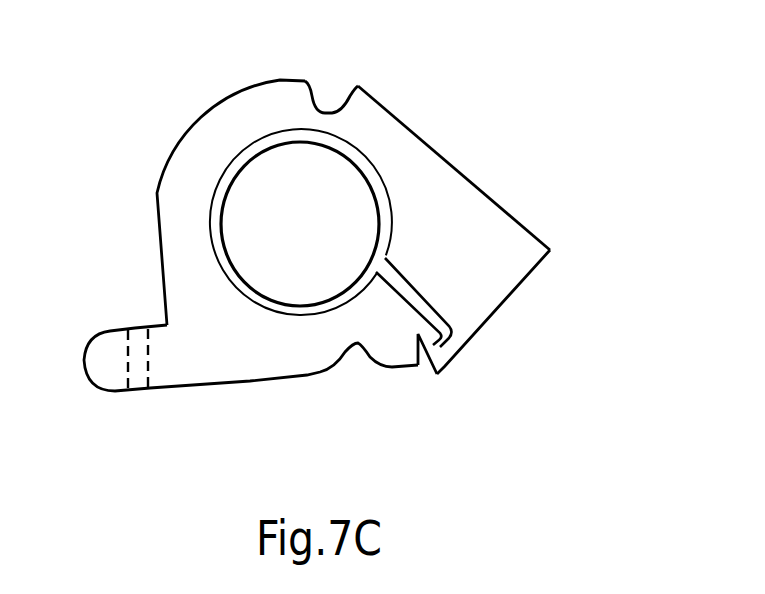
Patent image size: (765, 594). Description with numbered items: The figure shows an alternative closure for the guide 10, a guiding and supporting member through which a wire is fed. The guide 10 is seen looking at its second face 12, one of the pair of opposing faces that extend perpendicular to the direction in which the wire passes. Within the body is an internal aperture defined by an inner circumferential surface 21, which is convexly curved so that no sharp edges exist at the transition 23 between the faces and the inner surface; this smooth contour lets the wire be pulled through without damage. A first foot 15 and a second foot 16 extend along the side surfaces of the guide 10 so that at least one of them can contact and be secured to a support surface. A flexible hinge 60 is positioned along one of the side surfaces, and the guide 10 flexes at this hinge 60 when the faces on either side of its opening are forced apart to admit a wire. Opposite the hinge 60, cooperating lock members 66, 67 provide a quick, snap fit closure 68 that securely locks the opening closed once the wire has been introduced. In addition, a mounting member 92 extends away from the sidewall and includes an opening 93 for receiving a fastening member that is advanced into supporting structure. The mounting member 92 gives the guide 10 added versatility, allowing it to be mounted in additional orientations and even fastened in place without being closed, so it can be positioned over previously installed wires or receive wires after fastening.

The guide 10 is at (586, 186).
The second face 12 is at (253, 366).
The first foot 15 is at (200, 389).
The second foot 16 is at (477, 169).
The inner circumferential surface 21 is at (366, 183).
The transition 23 is at (368, 158).
The hinge 60 is at (346, 69).
The lock member 66 is at (421, 324).
The lock member 67 is at (458, 375).
The snap fit closure 68 is at (417, 380).
The mounting member 92 is at (107, 387).
The opening 93 is at (128, 328).